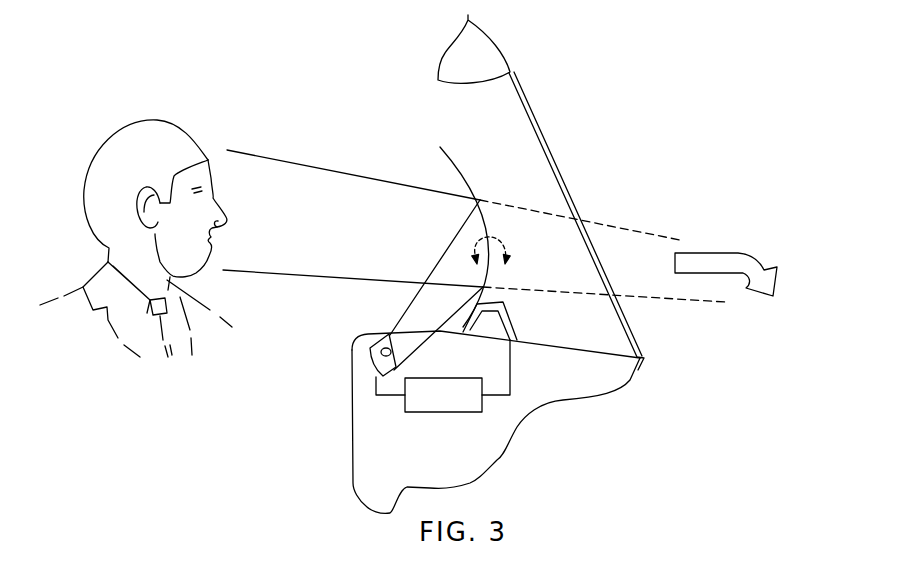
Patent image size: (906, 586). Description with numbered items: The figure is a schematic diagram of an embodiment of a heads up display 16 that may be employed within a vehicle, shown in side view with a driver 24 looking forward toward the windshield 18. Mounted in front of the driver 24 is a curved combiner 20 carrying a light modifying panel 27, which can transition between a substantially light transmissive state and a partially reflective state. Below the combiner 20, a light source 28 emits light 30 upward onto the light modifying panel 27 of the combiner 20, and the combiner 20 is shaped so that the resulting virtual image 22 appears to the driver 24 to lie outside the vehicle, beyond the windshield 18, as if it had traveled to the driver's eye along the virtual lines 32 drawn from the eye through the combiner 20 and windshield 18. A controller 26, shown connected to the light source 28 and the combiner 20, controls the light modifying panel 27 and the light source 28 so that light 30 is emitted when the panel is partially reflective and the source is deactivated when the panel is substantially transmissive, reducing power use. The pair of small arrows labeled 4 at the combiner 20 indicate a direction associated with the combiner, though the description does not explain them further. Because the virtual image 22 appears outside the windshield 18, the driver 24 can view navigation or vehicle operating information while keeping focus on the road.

The driver 24 is at (120, 140).
The windshield 18 is at (537, 127).
The heads up display 16 is at (493, 164).
The combiner 20 is at (446, 148).
The light modifying panel 27 is at (512, 193).
The virtual lines 32 is at (635, 232).
The virtual image 22 is at (748, 253).
The rotation direction of combiner 4 is at (488, 261).
The light 30 is at (412, 312).
The light source 28 is at (372, 360).
The controller 26 is at (430, 398).